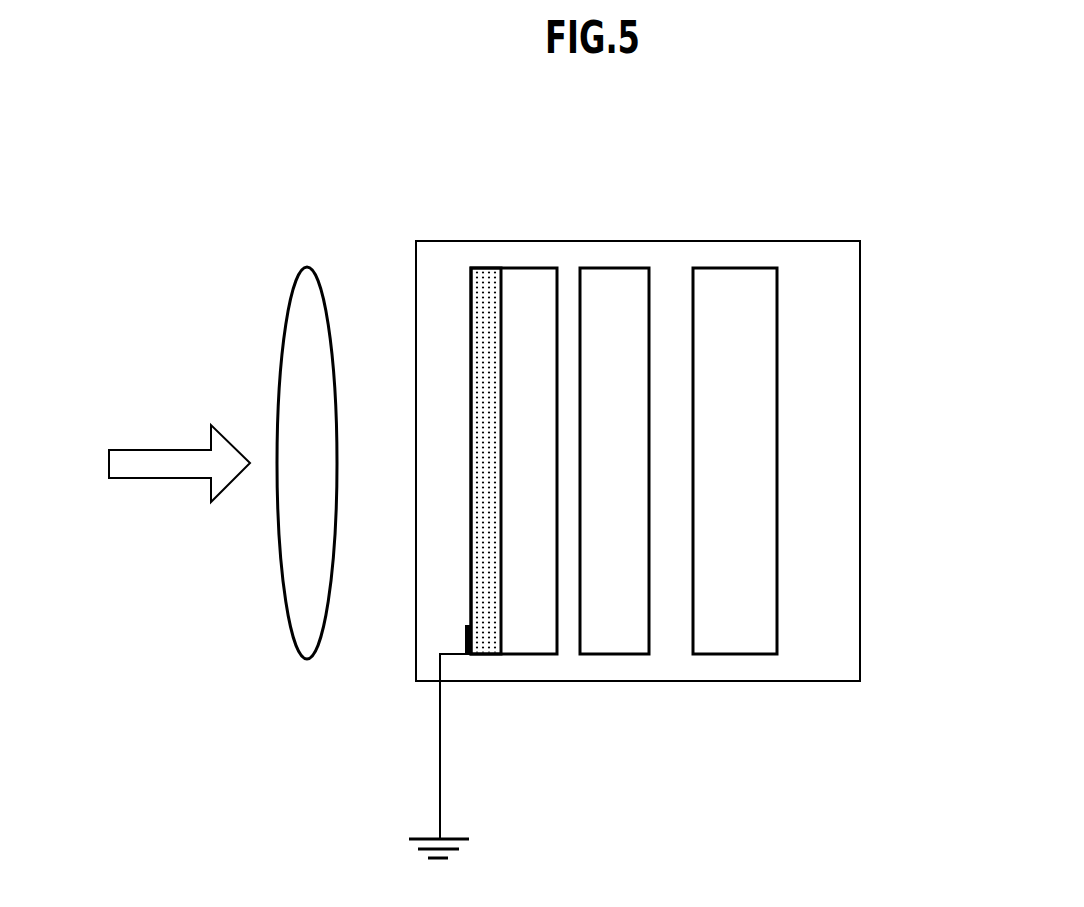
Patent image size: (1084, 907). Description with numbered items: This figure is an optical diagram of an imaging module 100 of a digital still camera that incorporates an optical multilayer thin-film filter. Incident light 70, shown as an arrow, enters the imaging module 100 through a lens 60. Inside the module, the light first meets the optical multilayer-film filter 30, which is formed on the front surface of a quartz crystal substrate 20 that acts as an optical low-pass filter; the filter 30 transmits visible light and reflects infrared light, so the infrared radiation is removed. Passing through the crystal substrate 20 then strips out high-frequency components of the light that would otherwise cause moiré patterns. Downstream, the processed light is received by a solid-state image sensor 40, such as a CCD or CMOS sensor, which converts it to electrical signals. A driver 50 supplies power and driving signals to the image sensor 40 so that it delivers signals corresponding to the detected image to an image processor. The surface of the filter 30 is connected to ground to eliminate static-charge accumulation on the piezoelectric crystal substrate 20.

The imaging module 100 is at (860, 241).
The quartz crystal substrate 20 is at (527, 268).
The optical multilayer-film filter 30 is at (489, 268).
The solid-state image sensor 40 is at (611, 268).
The driver 50 is at (722, 268).
The lens 60 is at (310, 267).
The incident light 70 is at (139, 450).